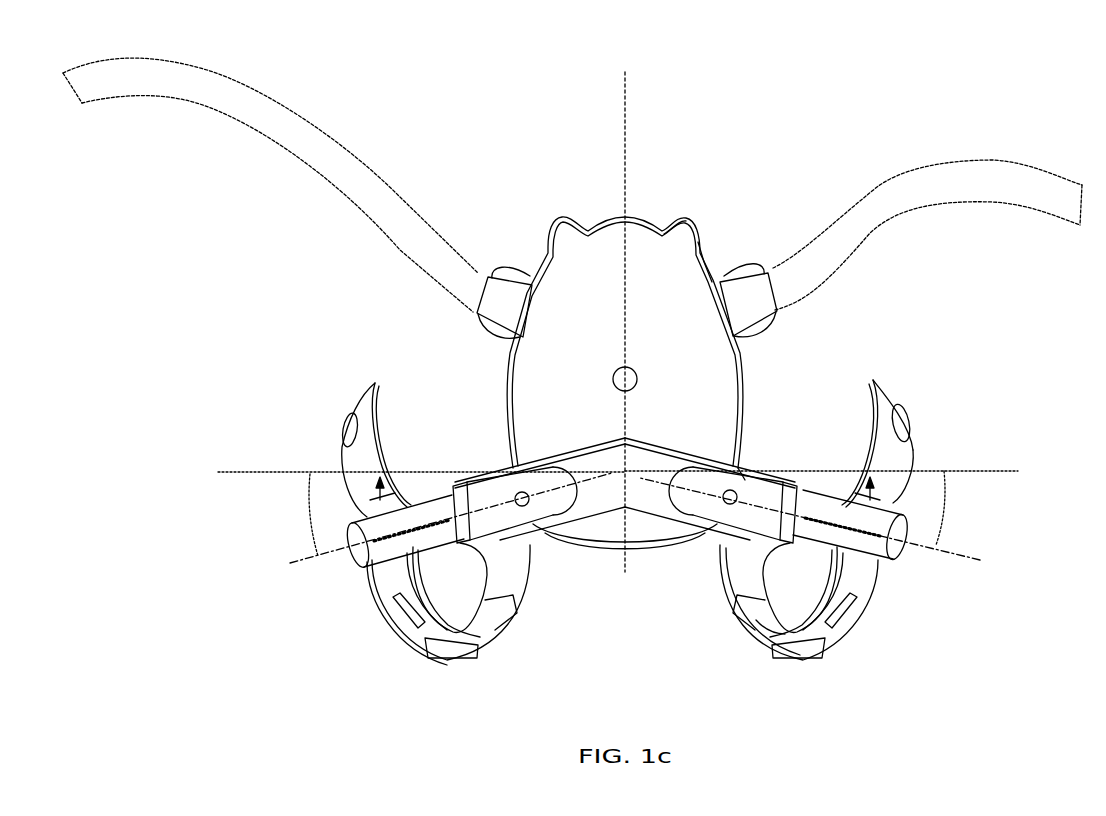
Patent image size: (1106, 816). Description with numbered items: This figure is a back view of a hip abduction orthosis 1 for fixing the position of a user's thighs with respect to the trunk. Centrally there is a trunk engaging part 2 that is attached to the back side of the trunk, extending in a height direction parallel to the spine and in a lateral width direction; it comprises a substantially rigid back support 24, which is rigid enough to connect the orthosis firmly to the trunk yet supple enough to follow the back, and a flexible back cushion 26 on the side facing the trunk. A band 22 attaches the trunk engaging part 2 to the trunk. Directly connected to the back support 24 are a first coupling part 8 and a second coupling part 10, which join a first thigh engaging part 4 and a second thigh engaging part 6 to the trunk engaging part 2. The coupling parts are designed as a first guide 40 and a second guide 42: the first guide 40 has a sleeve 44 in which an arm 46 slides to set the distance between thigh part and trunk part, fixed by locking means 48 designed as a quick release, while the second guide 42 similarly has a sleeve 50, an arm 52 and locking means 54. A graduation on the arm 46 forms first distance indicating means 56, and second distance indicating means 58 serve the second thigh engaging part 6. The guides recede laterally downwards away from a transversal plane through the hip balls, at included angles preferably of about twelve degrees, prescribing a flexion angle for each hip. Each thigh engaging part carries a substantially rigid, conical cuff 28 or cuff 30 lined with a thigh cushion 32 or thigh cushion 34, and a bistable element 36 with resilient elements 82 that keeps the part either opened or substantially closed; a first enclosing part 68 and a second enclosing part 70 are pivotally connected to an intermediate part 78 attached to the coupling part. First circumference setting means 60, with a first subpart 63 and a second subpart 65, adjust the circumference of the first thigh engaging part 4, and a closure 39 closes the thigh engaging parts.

The hip abduction orthosis 1 is at (1025, 734).
The trunk engaging part 2 is at (640, 250).
The first thigh engaging part 4 is at (848, 670).
The second thigh engaging part 6 is at (377, 632).
The first coupling part 8 is at (800, 448).
The second coupling part 10 is at (423, 440).
The band 22 is at (338, 143).
The substantially rigid back support 24 is at (698, 220).
The back cushion 26 is at (685, 218).
The cuff 28 is at (915, 452).
The cuff 30 is at (340, 455).
The thigh cushion 32 is at (876, 378).
The thigh cushion 34 is at (375, 388).
The bistable element 36 is at (360, 578).
The closure 39 is at (347, 430).
The first guide 40 is at (818, 415).
The second guide 42 is at (447, 461).
The sleeve 44 is at (782, 467).
The arm 46 is at (800, 583).
The locking means 48 is at (753, 467).
The sleeve 50 is at (467, 483).
The arm 52 is at (417, 503).
The locking means 54 is at (497, 477).
The first distance indicating means 56 is at (823, 550).
The second distance indicating means 58 is at (427, 550).
The first circumference setting means 60 is at (813, 670).
The first subpart 63 is at (853, 637).
The second subpart 65 is at (777, 640).
The first enclosing part 68 is at (868, 615).
The second enclosing part 70 is at (912, 463).
The intermediate part 78 is at (880, 577).
The resilient element 82 is at (887, 480).